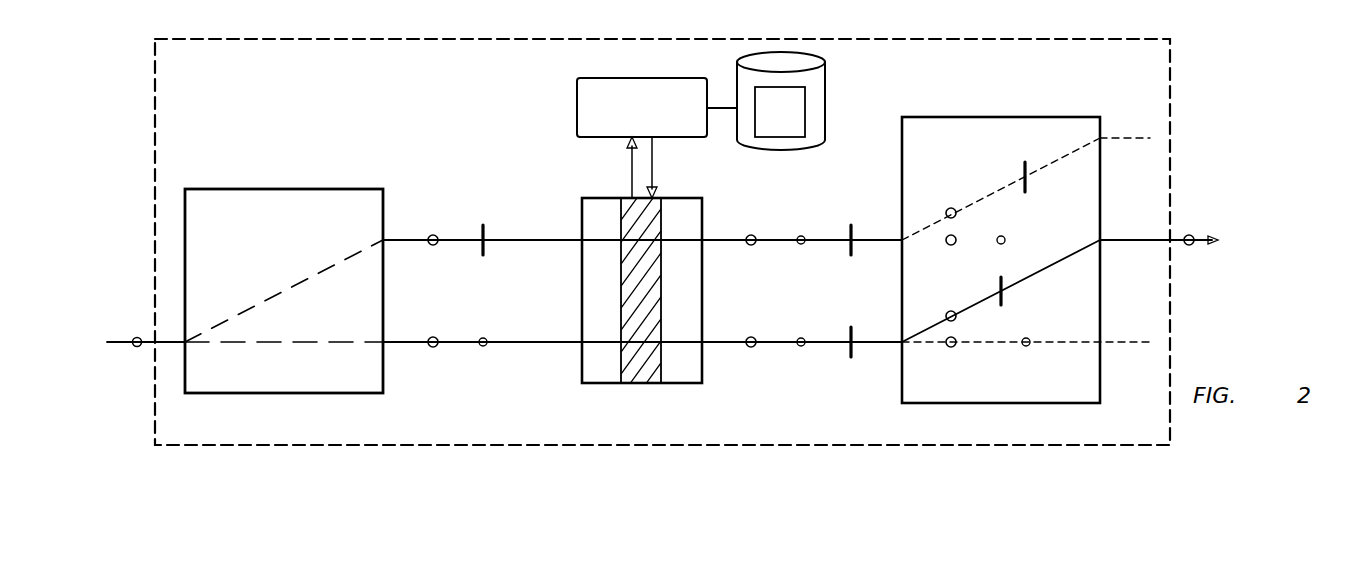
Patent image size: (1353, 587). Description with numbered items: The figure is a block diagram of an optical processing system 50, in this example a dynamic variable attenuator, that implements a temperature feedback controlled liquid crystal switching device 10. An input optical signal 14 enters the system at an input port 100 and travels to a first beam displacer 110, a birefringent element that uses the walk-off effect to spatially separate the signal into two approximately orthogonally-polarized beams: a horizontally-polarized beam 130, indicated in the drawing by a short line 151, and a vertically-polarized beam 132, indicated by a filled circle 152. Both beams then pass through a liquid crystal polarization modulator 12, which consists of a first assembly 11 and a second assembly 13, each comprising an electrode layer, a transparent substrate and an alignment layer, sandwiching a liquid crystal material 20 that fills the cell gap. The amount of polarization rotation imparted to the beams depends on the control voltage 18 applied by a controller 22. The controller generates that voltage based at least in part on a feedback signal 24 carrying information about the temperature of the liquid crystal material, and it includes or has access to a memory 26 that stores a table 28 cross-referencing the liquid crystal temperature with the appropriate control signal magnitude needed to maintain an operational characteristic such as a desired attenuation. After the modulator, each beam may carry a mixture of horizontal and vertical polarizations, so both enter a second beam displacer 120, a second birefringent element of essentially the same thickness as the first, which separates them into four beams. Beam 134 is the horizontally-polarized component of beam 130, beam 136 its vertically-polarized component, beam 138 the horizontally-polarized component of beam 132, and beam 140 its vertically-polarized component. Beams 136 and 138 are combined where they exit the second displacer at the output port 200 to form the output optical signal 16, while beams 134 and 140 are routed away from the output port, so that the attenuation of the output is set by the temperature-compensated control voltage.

The temperature feedback controlled liquid crystal switching device 10 is at (829, 200).
The first assembly 11 is at (617, 299).
The liquid crystal polarization modulator 12 is at (646, 302).
The second assembly 13 is at (696, 299).
The input optical signal 14 is at (137, 347).
The output optical signal 16 is at (1189, 245).
The control voltage 18 is at (654, 171).
The liquid crystal material 20 is at (630, 385).
The controller 22 is at (577, 108).
The feedback signal 24 is at (630, 168).
The memory 26 is at (808, 101).
The table 28 is at (794, 123).
The optical processing system 50 is at (155, 96).
The input port 100 is at (124, 342).
The first beam displacer 110 is at (284, 189).
The second beam displacer 120 is at (1000, 117).
The horizontally-polarized beam 130 is at (433, 235).
The vertically-polarized beam 132 is at (433, 347).
The horizontally-polarized component of beam 130 134 is at (948, 210).
The vertically-polarized component of beam 130 136 is at (954, 245).
The horizontally-polarized component of beam 132 138 is at (948, 313).
The vertically-polarized component of beam 132 140 is at (951, 347).
The short line 151 is at (486, 232).
The filled circle 152 is at (484, 346).
The output port 200 is at (1210, 238).